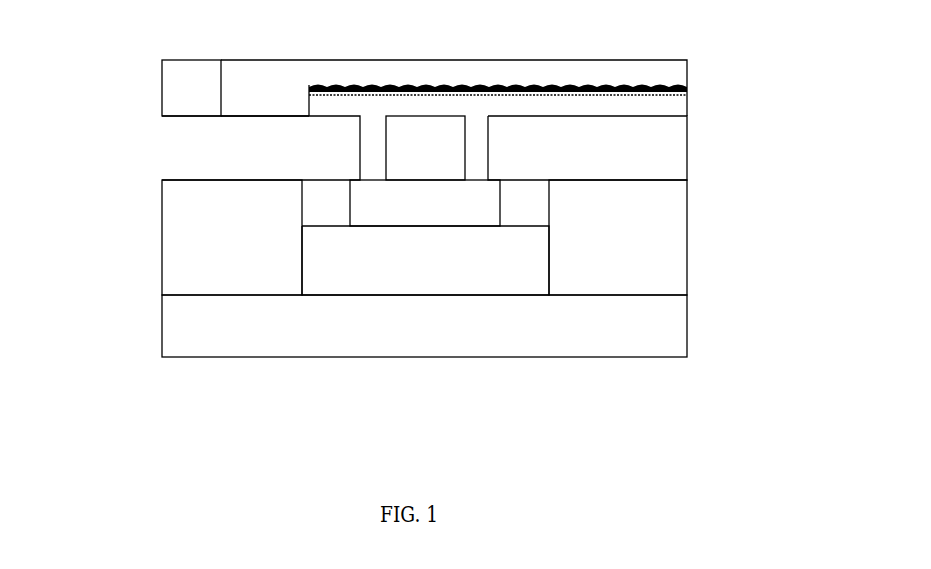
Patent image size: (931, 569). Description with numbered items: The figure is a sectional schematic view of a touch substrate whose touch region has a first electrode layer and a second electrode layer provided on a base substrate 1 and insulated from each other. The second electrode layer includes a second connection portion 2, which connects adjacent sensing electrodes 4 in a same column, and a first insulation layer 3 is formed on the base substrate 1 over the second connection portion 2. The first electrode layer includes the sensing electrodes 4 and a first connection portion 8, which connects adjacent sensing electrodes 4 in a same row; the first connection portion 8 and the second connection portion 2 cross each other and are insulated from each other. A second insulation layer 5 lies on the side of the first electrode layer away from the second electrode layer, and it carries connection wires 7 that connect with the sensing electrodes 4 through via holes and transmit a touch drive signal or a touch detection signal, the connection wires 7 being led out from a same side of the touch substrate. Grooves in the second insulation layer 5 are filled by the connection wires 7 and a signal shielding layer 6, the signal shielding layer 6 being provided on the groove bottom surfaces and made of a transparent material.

The base substrate 1 is at (424, 362).
The second connection portion 2 is at (407, 328).
The first insulation layer 3 is at (372, 311).
The sensing electrodes 4 is at (376, 159).
The second insulation layer 5 is at (139, 91).
The signal shielding layer 6 is at (558, 109).
The connection wires 7 is at (509, 68).
The first connection portion 8 is at (464, 93).